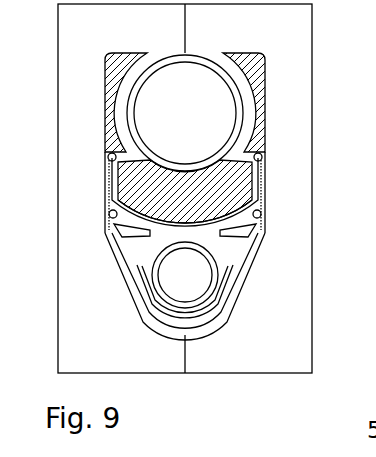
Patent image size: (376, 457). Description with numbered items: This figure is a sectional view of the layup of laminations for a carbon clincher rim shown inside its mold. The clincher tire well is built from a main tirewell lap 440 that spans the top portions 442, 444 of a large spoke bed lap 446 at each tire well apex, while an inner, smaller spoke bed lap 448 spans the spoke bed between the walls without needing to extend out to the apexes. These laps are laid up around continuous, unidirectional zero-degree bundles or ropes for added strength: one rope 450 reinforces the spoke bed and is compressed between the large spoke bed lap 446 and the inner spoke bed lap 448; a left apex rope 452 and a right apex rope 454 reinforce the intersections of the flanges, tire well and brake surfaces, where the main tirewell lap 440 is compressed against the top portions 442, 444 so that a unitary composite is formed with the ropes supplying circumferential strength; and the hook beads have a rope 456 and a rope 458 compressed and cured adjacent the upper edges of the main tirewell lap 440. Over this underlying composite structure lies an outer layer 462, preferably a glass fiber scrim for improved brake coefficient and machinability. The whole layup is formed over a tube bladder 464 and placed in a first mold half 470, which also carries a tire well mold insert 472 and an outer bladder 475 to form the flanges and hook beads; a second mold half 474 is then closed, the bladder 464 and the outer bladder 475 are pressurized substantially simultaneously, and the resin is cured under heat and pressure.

The main tirewell lap 440 is at (265, 172).
The top portion 442 is at (112, 236).
The top portion 444 is at (255, 223).
The large spoke bed lap 446 is at (200, 333).
The inner spoke bed lap 448 is at (227, 292).
The rope 450 is at (196, 320).
The left apex rope 452 is at (110, 214).
The right apex rope 454 is at (259, 212).
The rope 456 is at (108, 153).
The rope 458 is at (262, 153).
The outer layer 462 is at (264, 254).
The bladder 464 is at (217, 273).
The first mold half 470 is at (127, 27).
The tire well mold insert 472 is at (265, 68).
The second mold half 474 is at (250, 27).
The outer bladder 475 is at (217, 72).